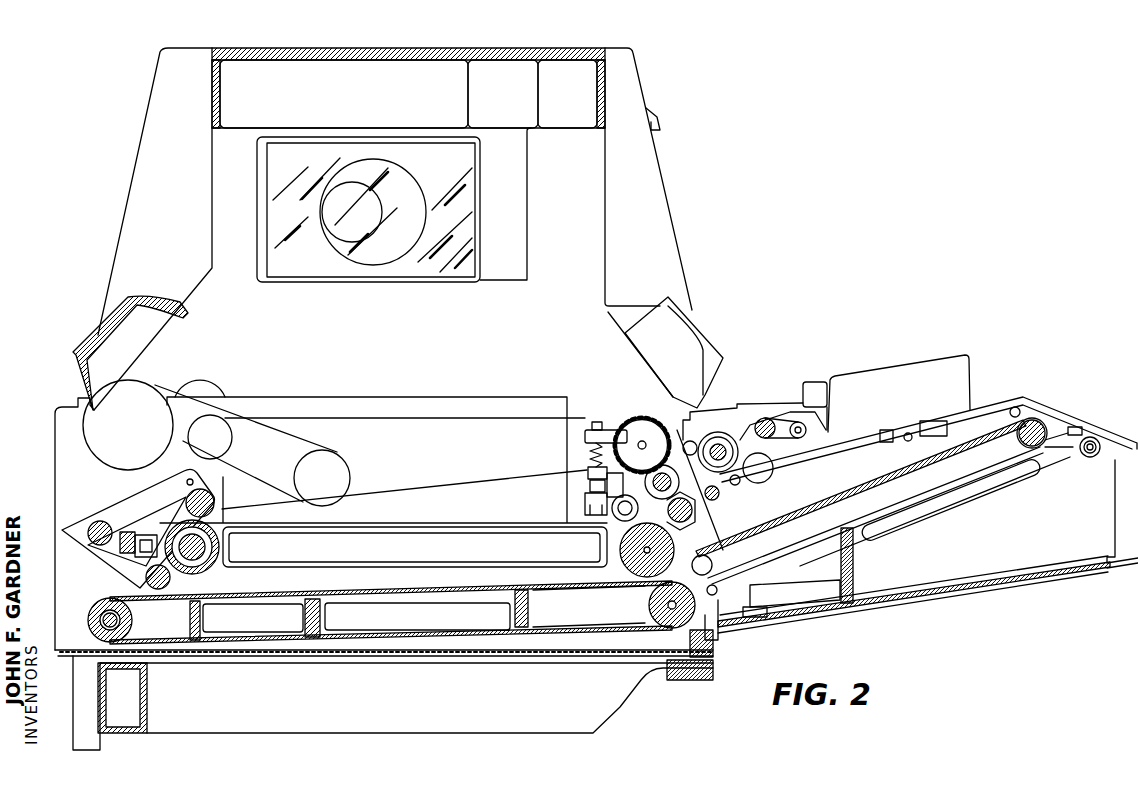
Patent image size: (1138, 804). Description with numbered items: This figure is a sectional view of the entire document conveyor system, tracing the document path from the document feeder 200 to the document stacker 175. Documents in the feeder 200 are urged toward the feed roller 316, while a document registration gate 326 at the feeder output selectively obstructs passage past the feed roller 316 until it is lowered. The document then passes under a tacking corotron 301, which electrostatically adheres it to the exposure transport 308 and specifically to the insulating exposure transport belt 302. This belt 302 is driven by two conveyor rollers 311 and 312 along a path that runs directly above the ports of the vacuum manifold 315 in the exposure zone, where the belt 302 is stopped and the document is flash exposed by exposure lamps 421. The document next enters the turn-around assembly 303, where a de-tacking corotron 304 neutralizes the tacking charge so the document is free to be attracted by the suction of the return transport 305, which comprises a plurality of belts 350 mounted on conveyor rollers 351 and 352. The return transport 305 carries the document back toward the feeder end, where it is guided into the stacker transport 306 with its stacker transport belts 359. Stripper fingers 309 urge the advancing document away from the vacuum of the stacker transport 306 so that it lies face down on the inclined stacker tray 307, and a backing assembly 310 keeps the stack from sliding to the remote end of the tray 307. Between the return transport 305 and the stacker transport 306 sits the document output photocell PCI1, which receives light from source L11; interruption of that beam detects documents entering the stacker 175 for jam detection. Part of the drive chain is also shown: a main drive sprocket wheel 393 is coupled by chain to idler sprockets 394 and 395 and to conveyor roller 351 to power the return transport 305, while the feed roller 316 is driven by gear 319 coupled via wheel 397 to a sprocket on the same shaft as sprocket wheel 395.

The document stacker 175 is at (1025, 563).
The document feeder 200 is at (903, 363).
The tacking corotron 301 is at (583, 497).
The exposure transport belt 302 is at (493, 517).
The turn-around assembly 303 is at (105, 505).
The de-tacking corotron 304 is at (140, 531).
The return transport 305 is at (310, 559).
The stacker transport 306 is at (865, 480).
The stacker tray 307 is at (930, 583).
The exposure transport 308 is at (363, 515).
The stripper fingers 309 is at (917, 520).
The backing assembly 310 is at (853, 567).
The conveyor roller 311 is at (217, 543).
The conveyor roller 312 is at (620, 545).
The vacuum manifold 315 is at (374, 548).
The feed roller 316 is at (665, 427).
The gear 319 is at (627, 427).
The document registration gate 326 is at (689, 522).
The belts 350 is at (460, 637).
The conveyor roller 351 is at (132, 619).
The conveyor roller 352 is at (594, 600).
The stacker transport belts 359 is at (1003, 480).
The main drive sprocket wheel 393 is at (342, 458).
The idler sprocket 394 is at (142, 392).
The idler sprocket 395 is at (187, 470).
The wheel 397 is at (230, 444).
The exposure lamps 421 is at (117, 346).
The light source L11 is at (569, 603).
The photocell PCI1 is at (718, 620).